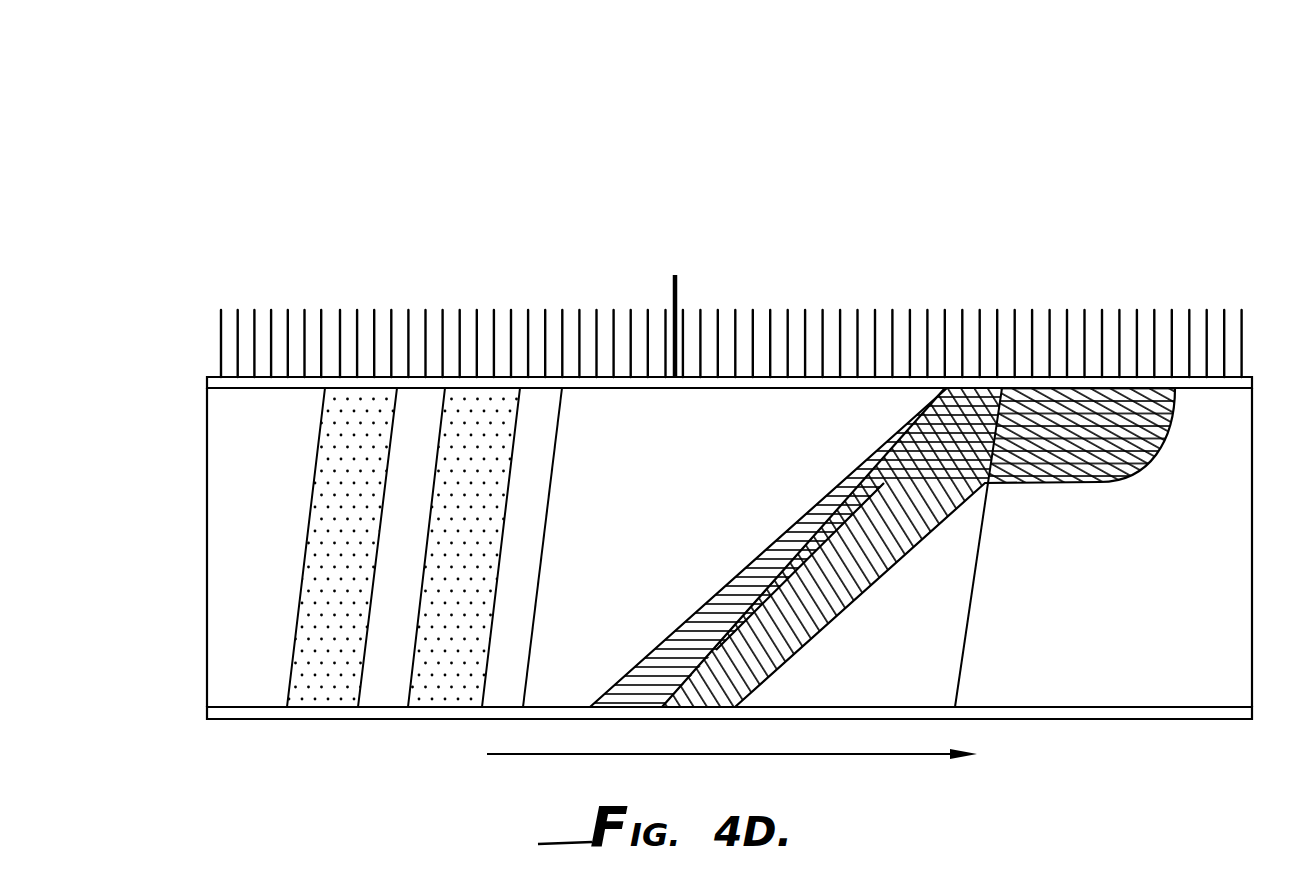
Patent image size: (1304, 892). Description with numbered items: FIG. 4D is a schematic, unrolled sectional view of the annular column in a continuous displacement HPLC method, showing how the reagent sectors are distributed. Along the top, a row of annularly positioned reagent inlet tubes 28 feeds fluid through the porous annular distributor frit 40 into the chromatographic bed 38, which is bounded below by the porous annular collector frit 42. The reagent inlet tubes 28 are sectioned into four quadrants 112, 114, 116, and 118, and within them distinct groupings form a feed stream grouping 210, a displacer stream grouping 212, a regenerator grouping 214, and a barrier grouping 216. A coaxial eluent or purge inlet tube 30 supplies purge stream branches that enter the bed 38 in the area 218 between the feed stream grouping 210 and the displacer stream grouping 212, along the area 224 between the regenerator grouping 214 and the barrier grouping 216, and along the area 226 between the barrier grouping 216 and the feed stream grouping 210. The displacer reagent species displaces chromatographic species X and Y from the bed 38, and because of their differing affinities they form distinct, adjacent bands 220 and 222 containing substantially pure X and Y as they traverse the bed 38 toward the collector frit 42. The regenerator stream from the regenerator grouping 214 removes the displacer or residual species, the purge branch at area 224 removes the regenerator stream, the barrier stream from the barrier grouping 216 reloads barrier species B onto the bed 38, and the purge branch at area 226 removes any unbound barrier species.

The reagent inlet tubes 28 is at (1252, 345).
The eluent inlet tube 30 is at (678, 292).
The chromatographic bed 38 is at (215, 555).
The porous annular distributor frit 40 is at (207, 382).
The porous annular collector frit 42 is at (207, 716).
The first quadrant 112 is at (996, 123).
The second quadrant 114 is at (978, 122).
The third quadrant 116 is at (482, 122).
The fourth quadrant 118 is at (218, 120).
The feed stream grouping 210 is at (1135, 298).
The displacer stream grouping 212 is at (1038, 255).
The regenerator grouping 214 is at (460, 263).
The barrier grouping 216 is at (410, 263).
The area between feed stream grouping and displacer stream grouping 218 is at (1128, 307).
The band of chromatographic species X 220 is at (820, 624).
The band of chromatographic species Y 222 is at (714, 596).
The area between regenerator grouping and barrier grouping 224 is at (520, 303).
The area between barrier grouping and feed stream grouping 226 is at (330, 301).